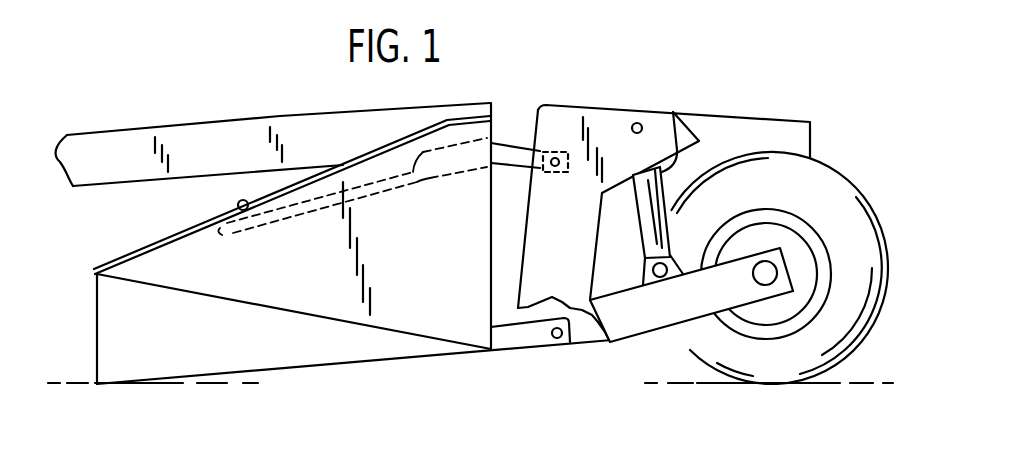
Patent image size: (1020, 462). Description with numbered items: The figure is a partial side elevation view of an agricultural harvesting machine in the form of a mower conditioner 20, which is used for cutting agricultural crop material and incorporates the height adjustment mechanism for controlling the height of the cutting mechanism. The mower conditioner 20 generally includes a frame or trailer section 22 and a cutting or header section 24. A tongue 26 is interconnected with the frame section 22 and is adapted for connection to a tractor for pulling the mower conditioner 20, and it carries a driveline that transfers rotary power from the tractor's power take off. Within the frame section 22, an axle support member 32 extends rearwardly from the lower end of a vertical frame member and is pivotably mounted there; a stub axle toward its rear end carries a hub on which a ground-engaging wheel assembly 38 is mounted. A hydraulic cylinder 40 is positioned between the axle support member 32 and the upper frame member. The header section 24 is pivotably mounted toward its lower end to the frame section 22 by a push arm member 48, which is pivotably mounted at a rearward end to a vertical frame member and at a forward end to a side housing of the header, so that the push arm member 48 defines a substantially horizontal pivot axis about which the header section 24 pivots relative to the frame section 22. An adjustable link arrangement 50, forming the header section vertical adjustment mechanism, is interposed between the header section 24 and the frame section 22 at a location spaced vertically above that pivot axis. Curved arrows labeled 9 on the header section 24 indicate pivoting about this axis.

The mower conditioner 20 is at (530, 28).
The frame section 22 is at (648, 63).
The header section 24 is at (104, 235).
The tongue 26 is at (280, 116).
The pivot rotation indicator 9 is at (289, 228).
The axle support member 32 is at (640, 333).
The ground-engaging wheel assembly 38 is at (887, 196).
The hydraulic cylinder 40 is at (673, 112).
The push arm member 48 is at (524, 343).
The adjustable link arrangement 50 is at (517, 104).